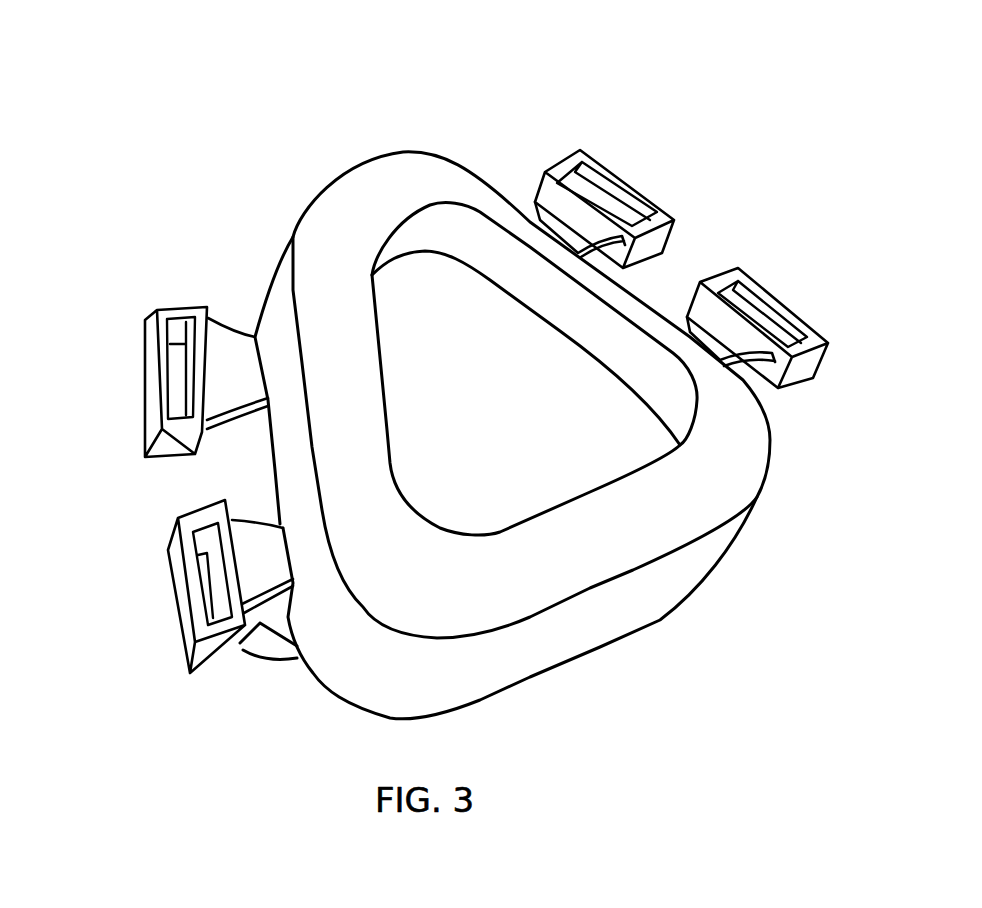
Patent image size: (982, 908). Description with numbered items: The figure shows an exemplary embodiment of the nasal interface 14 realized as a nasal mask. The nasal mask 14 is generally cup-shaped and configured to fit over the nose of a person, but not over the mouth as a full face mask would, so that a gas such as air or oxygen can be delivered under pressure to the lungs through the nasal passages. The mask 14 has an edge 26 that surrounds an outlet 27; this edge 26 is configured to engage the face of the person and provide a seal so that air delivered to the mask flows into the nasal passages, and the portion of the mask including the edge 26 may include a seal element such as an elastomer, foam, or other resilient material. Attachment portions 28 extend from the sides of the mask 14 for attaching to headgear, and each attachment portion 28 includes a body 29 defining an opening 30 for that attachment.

The nasal interface 14 is at (143, 98).
The edge 26 is at (376, 175).
The outlet 27 is at (532, 470).
The attachment portion 28 is at (662, 160).
The body 29 is at (546, 172).
The opening 30 is at (597, 184).